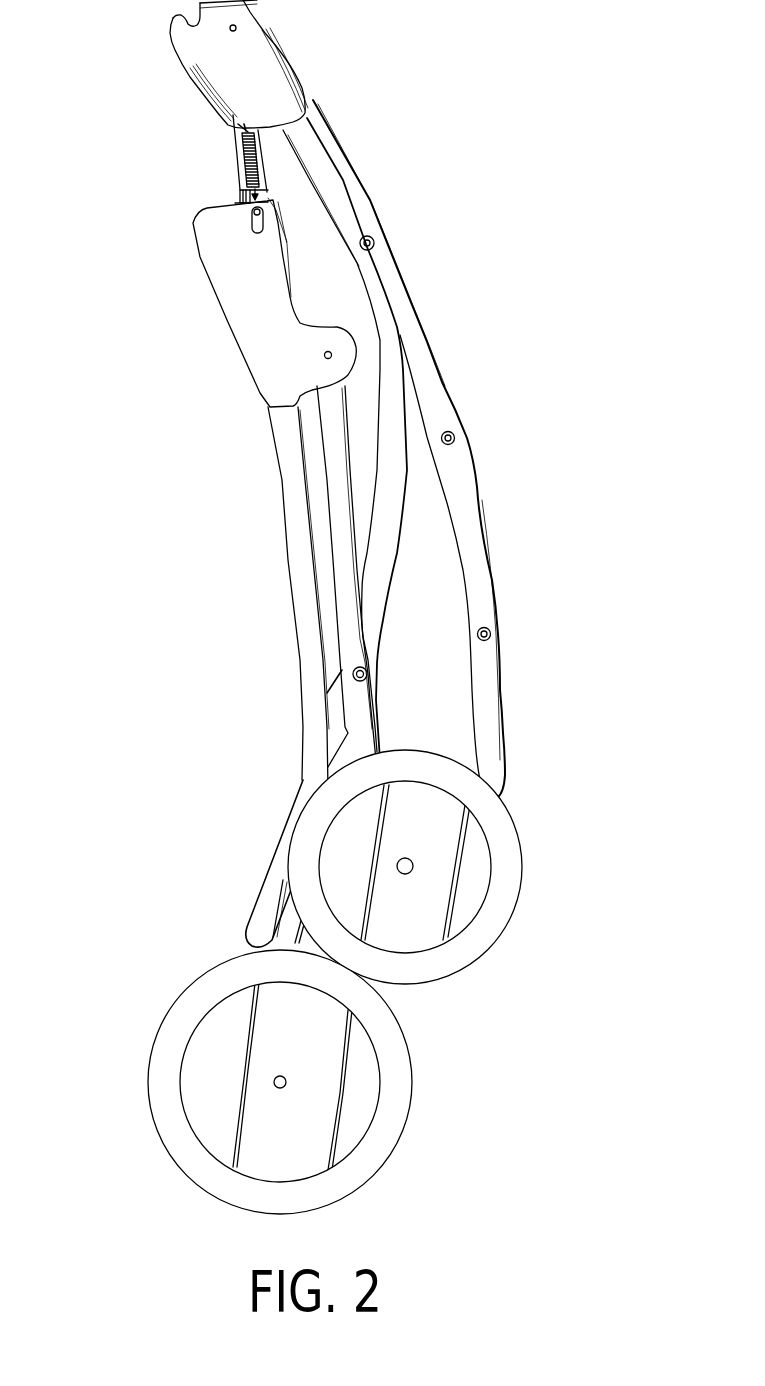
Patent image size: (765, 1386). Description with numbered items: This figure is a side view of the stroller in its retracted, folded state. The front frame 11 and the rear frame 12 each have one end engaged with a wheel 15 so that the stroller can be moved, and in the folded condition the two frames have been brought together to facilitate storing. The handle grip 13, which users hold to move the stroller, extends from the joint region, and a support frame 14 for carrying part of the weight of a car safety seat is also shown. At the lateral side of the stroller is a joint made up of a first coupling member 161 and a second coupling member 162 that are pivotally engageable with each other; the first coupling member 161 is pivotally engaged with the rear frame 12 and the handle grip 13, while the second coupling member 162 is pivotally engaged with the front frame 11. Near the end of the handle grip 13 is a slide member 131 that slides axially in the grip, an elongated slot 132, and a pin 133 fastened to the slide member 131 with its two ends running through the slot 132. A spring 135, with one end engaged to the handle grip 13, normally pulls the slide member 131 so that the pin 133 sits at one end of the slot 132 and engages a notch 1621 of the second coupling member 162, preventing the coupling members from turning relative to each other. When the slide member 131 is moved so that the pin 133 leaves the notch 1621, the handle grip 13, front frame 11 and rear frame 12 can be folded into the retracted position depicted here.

The front frame 11 is at (420, 347).
The rear frame 12 is at (356, 633).
The handle grip 13 is at (300, 550).
The support frame 14 is at (260, 913).
The wheels 15 is at (468, 948).
The slide member 131 is at (240, 200).
The elongated slot 132 is at (255, 227).
The pin 133 is at (252, 210).
The spring 135 is at (236, 163).
The first coupling member 161 is at (267, 342).
The second coupling member 162 is at (277, 25).
The notch 1621 is at (176, 12).